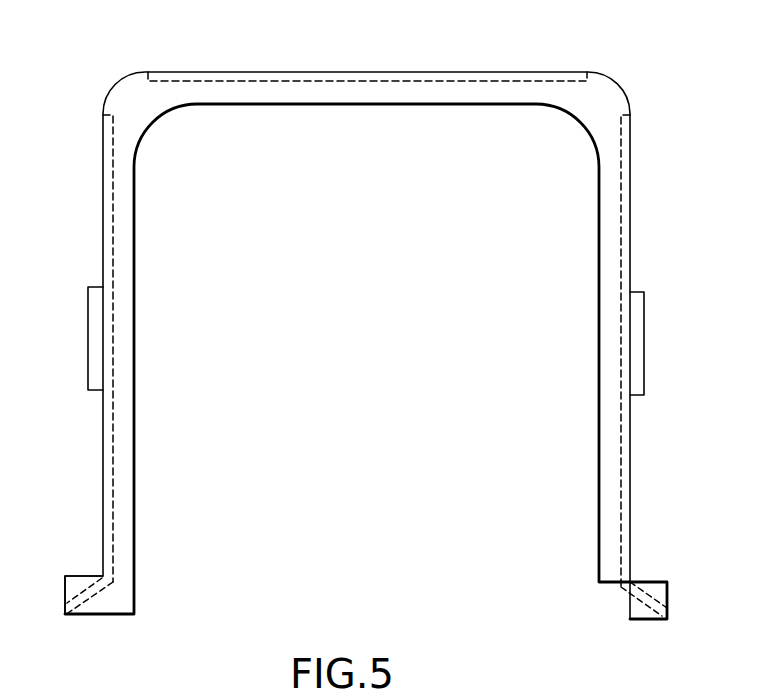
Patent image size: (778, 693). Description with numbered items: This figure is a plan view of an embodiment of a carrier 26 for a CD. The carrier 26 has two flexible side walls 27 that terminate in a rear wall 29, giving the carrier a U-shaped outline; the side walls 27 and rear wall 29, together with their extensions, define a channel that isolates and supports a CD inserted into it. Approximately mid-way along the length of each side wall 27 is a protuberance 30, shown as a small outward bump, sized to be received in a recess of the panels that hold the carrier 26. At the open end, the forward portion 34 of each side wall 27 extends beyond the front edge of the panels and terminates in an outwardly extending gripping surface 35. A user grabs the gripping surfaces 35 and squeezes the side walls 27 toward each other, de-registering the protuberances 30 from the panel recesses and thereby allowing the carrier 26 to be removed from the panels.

The carrier 26 is at (652, 260).
The flexible side walls 27 is at (114, 518).
The rear wall 29 is at (361, 82).
The protuberance 30 is at (97, 312).
The forward portion 34 is at (127, 598).
The gripping surface 35 is at (68, 588).